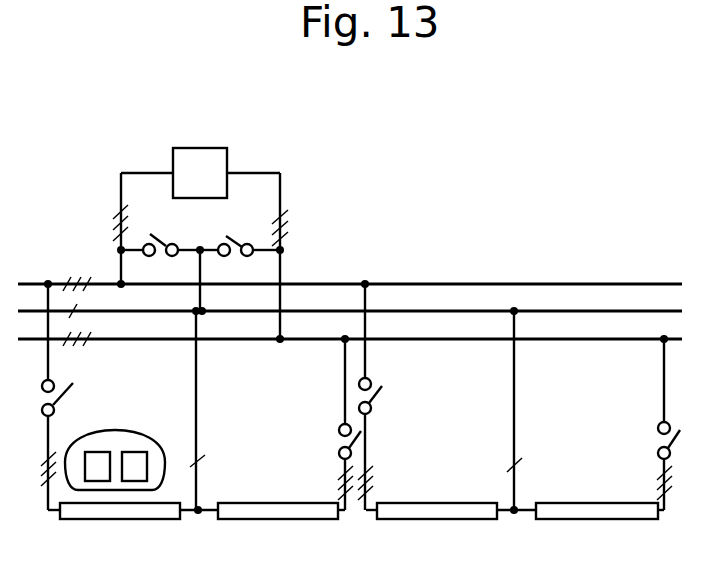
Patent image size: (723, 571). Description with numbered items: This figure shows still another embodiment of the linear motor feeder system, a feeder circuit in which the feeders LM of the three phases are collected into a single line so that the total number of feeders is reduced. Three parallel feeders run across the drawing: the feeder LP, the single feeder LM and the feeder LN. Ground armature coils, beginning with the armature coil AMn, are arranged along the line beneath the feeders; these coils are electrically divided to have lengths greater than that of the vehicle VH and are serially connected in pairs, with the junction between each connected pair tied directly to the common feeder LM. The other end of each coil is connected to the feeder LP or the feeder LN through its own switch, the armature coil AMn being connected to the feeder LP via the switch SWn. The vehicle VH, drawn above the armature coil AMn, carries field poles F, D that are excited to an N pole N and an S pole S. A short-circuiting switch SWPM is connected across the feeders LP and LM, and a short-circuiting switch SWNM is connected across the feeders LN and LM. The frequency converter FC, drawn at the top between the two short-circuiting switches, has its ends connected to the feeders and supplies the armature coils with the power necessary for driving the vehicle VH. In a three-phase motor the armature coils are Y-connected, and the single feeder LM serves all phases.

The frequency converter FC is at (200, 173).
The short-circuiting switch SWPM is at (157, 237).
The short-circuiting switch SWNM is at (238, 240).
The feeder LP is at (483, 283).
The feeder LM is at (548, 310).
The feeder LN is at (605, 338).
The switch SWn is at (63, 396).
The vehicle VH is at (158, 446).
The field pole F is at (98, 452).
The field pole D is at (134, 452).
The S pole S is at (97, 467).
The N pole N is at (134, 467).
The armature coil AMn is at (120, 530).